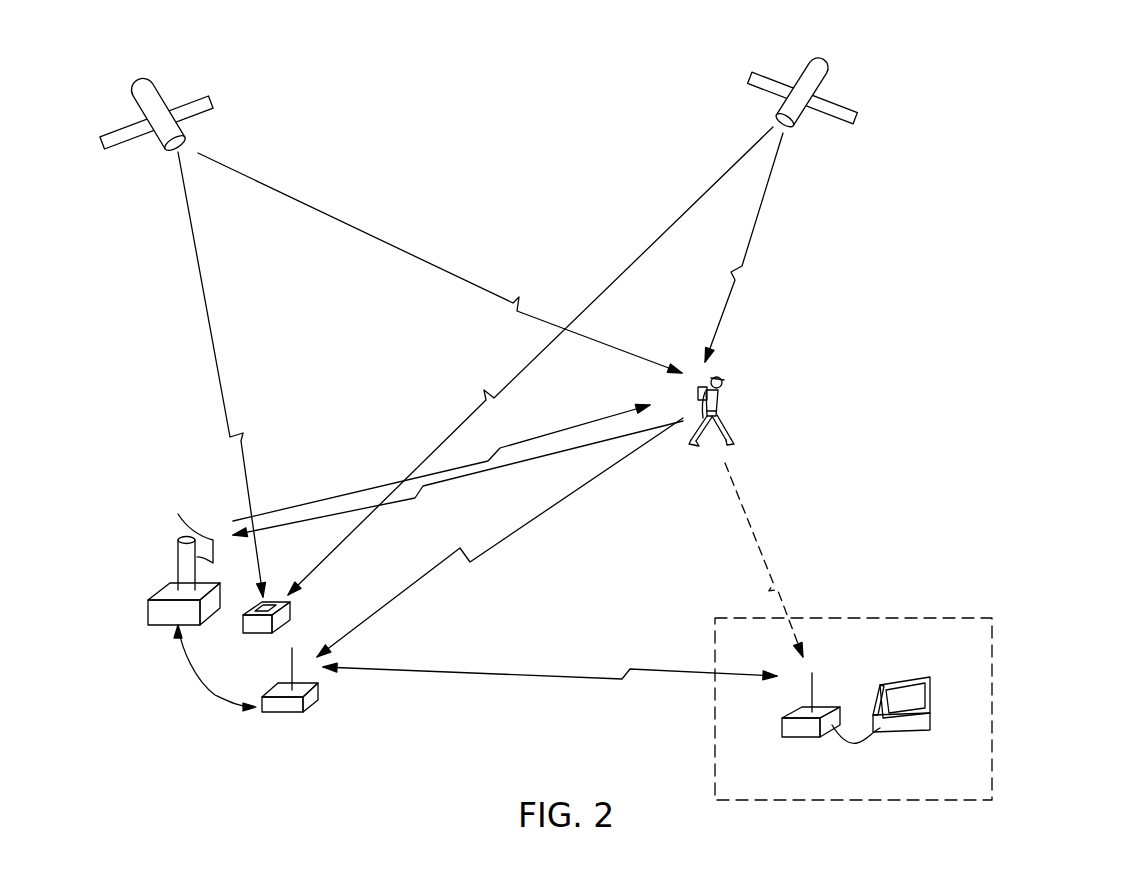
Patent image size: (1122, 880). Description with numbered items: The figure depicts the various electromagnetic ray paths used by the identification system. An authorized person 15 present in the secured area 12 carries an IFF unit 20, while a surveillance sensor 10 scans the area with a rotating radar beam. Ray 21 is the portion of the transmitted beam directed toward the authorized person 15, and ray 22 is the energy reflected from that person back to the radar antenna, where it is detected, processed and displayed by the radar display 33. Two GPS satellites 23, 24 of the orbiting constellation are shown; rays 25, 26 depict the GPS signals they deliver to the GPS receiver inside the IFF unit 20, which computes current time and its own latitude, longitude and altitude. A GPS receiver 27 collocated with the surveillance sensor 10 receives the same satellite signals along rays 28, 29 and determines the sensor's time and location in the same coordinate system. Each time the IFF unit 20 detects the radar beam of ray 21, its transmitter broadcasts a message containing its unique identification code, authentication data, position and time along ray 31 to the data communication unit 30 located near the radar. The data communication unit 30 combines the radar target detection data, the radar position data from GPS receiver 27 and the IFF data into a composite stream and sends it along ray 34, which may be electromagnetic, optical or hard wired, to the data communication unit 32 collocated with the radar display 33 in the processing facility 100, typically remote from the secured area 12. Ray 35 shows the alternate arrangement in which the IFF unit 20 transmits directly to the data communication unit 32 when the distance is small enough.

The surveillance sensor 10 is at (177, 516).
The secured area 12 is at (669, 551).
The authorized person 15 is at (722, 379).
The IFF unit 20 is at (705, 383).
The ray 21 is at (330, 497).
The ray 22 is at (470, 475).
The GPS satellite 23 is at (155, 91).
The GPS satellite 24 is at (822, 78).
The ray 25 is at (347, 224).
The ray 26 is at (754, 228).
The GPS receiver 27 is at (300, 611).
The ray 28 is at (206, 306).
The ray 29 is at (698, 200).
The data communication unit 30 is at (306, 704).
The ray 31 is at (508, 536).
The data communication unit 32 is at (782, 713).
The radar display 33 is at (933, 685).
The ray 34 is at (518, 675).
The ray 35 is at (758, 530).
The processing facility 100 is at (990, 727).